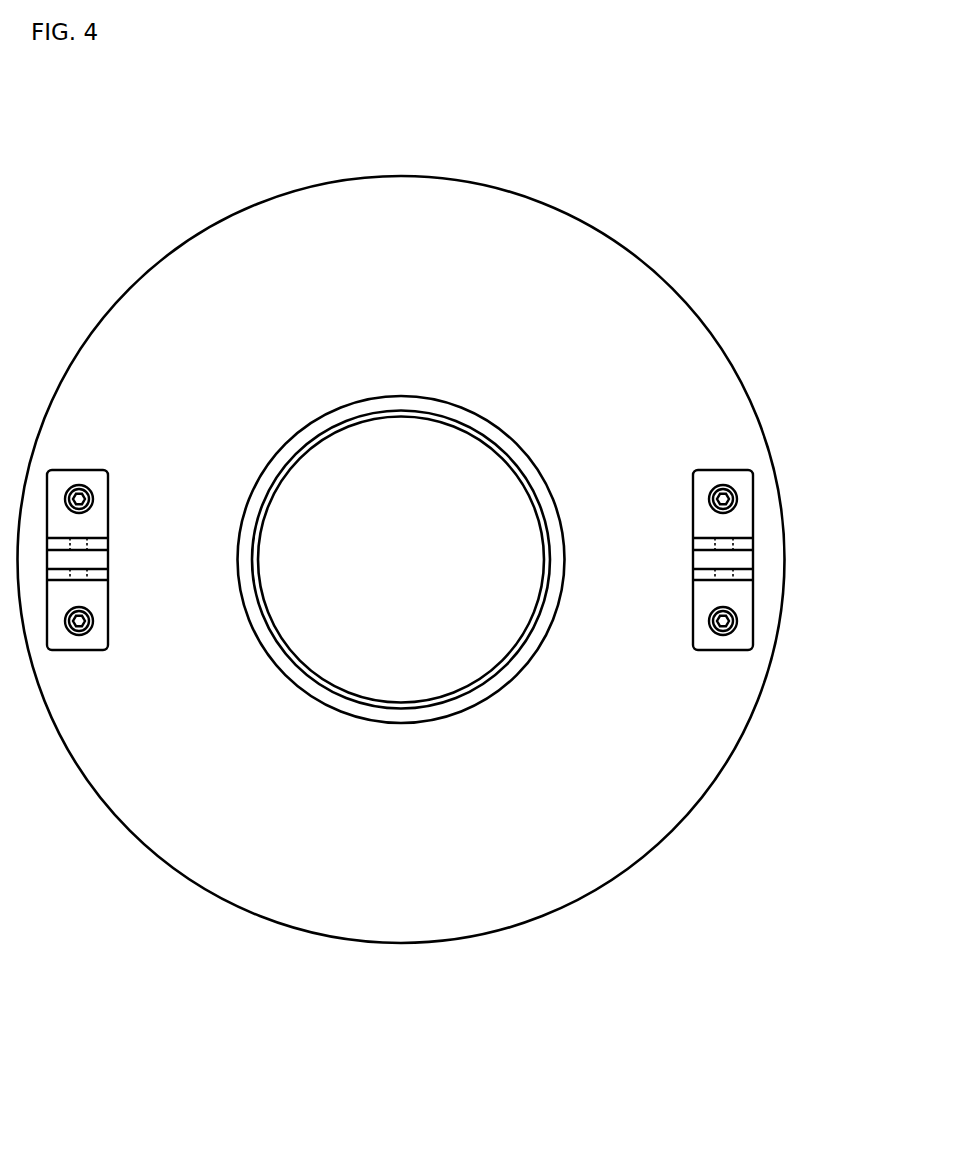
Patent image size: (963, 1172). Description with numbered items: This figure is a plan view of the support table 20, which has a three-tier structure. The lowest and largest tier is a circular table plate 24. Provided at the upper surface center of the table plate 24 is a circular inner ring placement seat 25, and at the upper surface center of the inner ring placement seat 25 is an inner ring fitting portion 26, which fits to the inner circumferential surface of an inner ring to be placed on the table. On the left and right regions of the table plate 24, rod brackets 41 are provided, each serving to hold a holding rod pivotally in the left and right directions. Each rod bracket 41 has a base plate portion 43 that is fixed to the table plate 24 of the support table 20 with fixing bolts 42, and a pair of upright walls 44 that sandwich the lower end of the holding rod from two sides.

The support table 20 is at (661, 279).
The table plate 24 is at (564, 248).
The inner ring placement seat 25 is at (492, 435).
The inner ring fitting portion 26 is at (493, 508).
The rod bracket 41 is at (724, 470).
The fixing bolt 42 is at (737, 498).
The base plate portion 43 is at (742, 521).
The upright wall 44 is at (747, 545).